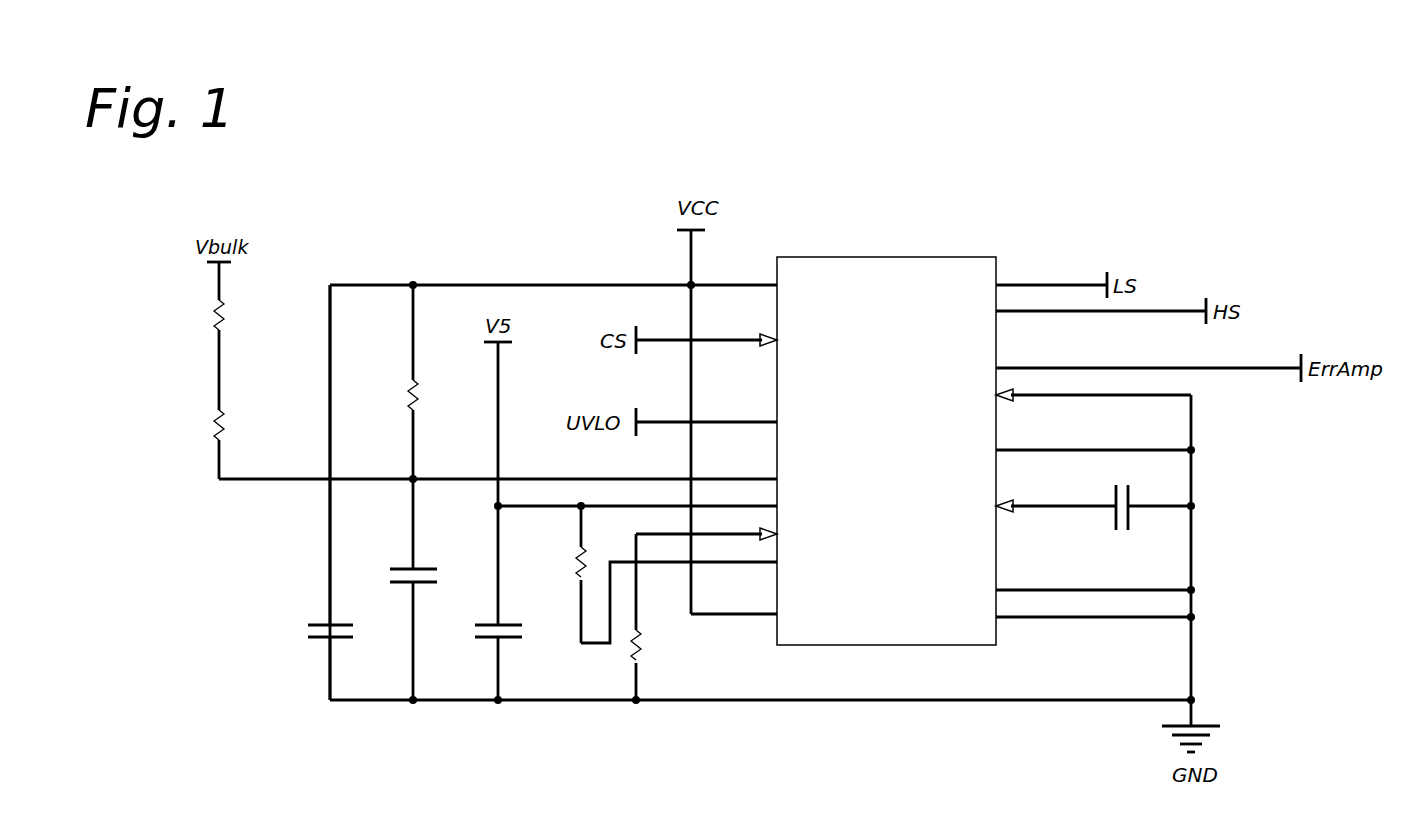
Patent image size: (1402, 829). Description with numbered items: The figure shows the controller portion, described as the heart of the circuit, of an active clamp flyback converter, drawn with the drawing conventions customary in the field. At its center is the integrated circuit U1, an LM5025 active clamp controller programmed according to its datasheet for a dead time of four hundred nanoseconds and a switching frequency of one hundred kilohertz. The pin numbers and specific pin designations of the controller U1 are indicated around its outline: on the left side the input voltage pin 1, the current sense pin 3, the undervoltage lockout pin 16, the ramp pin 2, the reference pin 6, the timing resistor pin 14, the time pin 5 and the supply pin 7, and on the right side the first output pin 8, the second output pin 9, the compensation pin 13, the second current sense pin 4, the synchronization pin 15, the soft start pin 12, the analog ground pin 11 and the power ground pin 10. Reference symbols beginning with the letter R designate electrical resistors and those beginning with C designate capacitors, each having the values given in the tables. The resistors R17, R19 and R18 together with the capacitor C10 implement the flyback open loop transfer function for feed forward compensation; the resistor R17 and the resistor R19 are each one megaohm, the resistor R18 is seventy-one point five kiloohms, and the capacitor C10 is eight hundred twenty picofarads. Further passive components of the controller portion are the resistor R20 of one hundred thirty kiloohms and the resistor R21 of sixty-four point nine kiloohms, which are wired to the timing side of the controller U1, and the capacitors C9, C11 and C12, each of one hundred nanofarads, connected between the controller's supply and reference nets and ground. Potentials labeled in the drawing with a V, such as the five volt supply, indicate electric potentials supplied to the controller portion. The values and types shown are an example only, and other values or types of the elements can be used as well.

The VIN pin 1 is at (777, 284).
The RAMP pin 2 is at (777, 477).
The CSI pin 3 is at (777, 338).
The CS2 pin 4 is at (1008, 393).
The TIME pin 5 is at (777, 560).
The REF pin 6 is at (777, 504).
The VCC pin 7 is at (777, 612).
The OUT_A pin 8 is at (996, 285).
The OUT_B pin 9 is at (996, 311).
The PGND pin 10 is at (996, 617).
The AGND pin 11 is at (996, 590).
The SS pin 12 is at (1004, 504).
The COMP pin 13 is at (996, 368).
The RT pin 14 is at (777, 532).
The SYNC pin 15 is at (996, 450).
The UVLO pin 16 is at (777, 420).
The active clamp controller U1 is at (868, 278).
The resistor R17 is at (244, 315).
The resistor R18 is at (438, 395).
The resistor R19 is at (244, 424).
The resistor R20 is at (557, 562).
The resistor R21 is at (661, 645).
The capacitor C9 is at (1119, 470).
The capacitor C10 is at (459, 578).
The capacitor C11 is at (376, 633).
The capacitor C12 is at (544, 633).